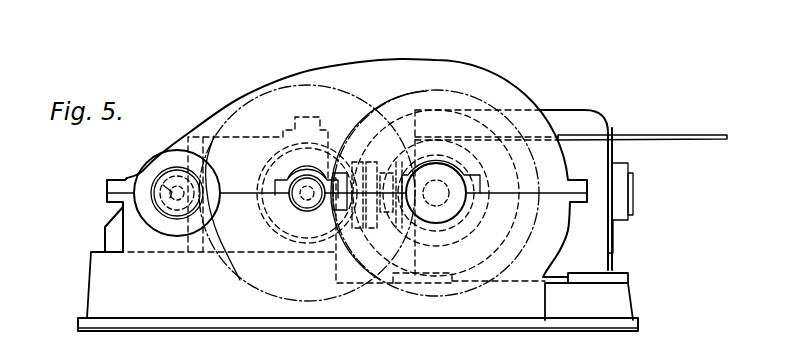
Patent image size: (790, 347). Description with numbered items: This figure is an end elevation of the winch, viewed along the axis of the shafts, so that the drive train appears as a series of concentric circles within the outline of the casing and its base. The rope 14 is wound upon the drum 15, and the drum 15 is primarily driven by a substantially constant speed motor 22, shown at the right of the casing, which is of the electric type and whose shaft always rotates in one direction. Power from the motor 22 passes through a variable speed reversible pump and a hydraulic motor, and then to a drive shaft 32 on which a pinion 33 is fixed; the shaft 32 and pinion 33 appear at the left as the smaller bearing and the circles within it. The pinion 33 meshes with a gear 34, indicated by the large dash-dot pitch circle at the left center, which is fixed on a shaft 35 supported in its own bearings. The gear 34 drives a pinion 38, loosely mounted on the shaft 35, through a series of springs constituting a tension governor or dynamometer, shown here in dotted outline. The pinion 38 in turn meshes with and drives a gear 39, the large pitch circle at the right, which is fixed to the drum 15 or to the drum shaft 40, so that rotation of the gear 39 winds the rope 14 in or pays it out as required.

The rope 14 is at (687, 126).
The drum 15 is at (548, 250).
The motor 22 is at (587, 112).
The drive shaft 32 is at (150, 168).
The pinion 33 is at (153, 207).
The gear 34 is at (262, 95).
The shaft 35 is at (280, 178).
The pinion 38 is at (276, 248).
The gear 39 is at (474, 97).
The drum shaft 40 is at (442, 220).